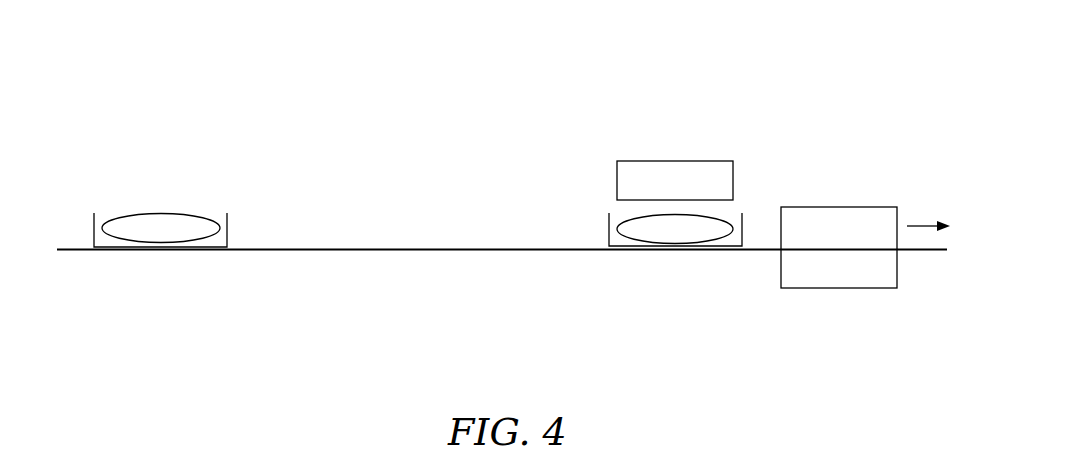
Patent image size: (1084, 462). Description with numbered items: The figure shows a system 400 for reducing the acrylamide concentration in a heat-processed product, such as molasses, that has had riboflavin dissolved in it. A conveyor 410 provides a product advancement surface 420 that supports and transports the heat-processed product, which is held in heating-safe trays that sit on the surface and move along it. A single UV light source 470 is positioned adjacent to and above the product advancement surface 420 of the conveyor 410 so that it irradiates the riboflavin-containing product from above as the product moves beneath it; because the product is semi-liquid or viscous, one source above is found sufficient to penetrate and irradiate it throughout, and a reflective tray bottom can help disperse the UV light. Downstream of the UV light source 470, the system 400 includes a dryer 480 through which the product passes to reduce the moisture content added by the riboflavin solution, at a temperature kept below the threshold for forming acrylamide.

The system 400 is at (524, 117).
The conveyor 410 is at (254, 257).
The product advancement surface 420 is at (90, 248).
The UV light source 470 is at (674, 160).
The dryer 480 is at (839, 207).